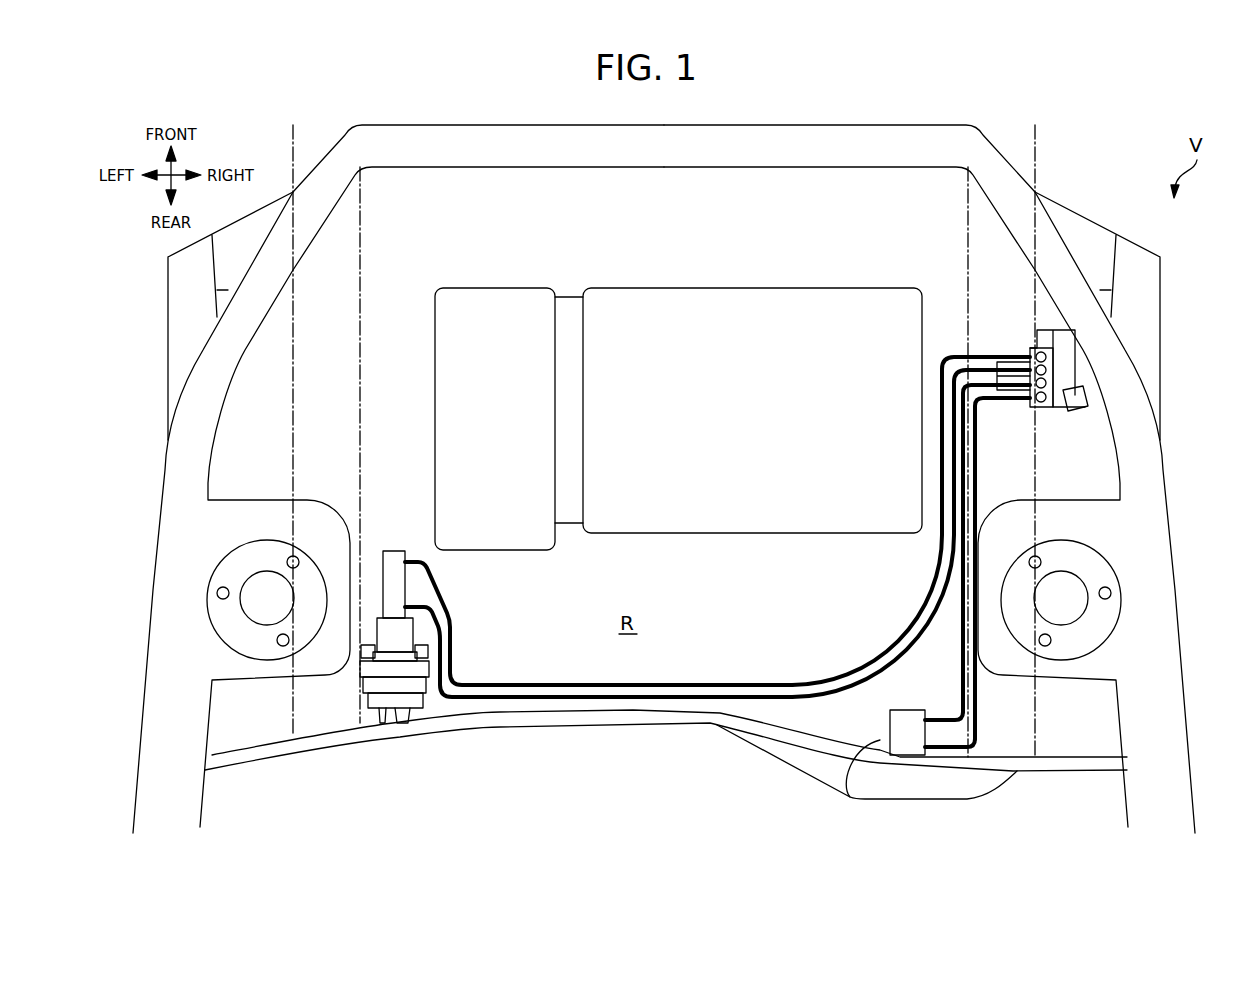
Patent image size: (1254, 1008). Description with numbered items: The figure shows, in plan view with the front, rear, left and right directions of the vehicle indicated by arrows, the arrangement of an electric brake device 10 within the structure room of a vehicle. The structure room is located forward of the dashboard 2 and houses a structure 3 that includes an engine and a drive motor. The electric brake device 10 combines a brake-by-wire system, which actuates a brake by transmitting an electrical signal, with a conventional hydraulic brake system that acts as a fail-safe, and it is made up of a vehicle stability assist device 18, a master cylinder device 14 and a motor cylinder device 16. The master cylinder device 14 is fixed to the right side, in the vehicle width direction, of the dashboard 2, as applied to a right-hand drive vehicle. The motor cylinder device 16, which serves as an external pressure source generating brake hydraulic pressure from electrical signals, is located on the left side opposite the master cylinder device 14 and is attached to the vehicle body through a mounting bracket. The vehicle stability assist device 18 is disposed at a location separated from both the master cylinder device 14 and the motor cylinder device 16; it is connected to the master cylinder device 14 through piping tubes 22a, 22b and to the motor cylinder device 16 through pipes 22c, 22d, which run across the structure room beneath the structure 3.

The dashboard 2 is at (1077, 773).
The structure 3 is at (752, 288).
The electric brake device 10 is at (808, 624).
The master cylinder device 14 is at (848, 797).
The motor cylinder device 16 is at (396, 683).
The vehicle stability assist device 18 is at (1057, 323).
The piping tube 22a is at (978, 715).
The piping tube 22b is at (961, 664).
The pipe 22c is at (575, 701).
The pipe 22d is at (663, 686).